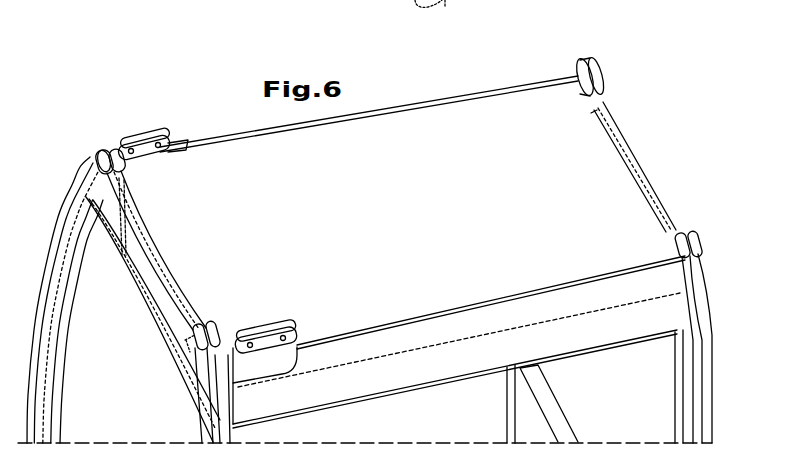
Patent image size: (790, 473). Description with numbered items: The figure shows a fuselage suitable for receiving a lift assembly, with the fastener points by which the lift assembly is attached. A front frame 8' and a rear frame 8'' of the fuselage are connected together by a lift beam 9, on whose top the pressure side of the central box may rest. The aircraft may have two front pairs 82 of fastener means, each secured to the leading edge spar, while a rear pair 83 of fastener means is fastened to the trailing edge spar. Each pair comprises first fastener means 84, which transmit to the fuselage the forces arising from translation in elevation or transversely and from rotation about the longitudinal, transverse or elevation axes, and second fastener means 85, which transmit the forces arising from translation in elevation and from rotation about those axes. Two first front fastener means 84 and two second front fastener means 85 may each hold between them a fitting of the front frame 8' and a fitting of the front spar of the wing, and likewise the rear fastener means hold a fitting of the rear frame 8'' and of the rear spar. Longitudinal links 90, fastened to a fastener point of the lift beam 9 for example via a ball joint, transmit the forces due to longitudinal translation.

The front frame 8' is at (128, 300).
The rear frame 8'' is at (673, 272).
The lift beam 9 is at (365, 375).
The front pair of fastener means 82 is at (105, 136).
The rear pair of fastener means 83 is at (193, 338).
The first fastener means 84 is at (115, 145).
The second fastener means 85 is at (590, 48).
The longitudinal link 90 is at (138, 132).